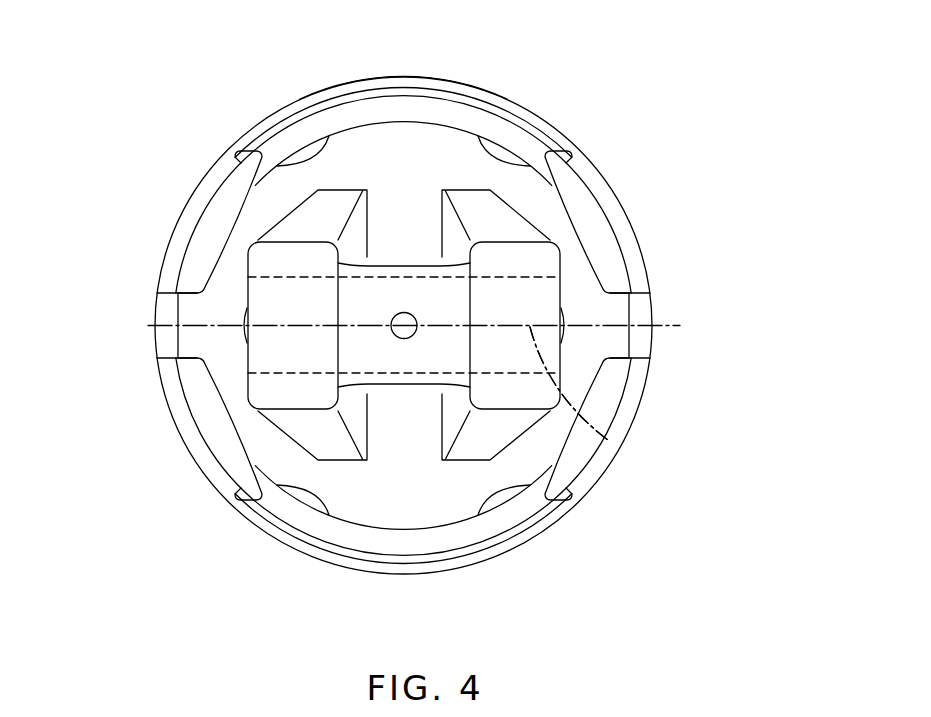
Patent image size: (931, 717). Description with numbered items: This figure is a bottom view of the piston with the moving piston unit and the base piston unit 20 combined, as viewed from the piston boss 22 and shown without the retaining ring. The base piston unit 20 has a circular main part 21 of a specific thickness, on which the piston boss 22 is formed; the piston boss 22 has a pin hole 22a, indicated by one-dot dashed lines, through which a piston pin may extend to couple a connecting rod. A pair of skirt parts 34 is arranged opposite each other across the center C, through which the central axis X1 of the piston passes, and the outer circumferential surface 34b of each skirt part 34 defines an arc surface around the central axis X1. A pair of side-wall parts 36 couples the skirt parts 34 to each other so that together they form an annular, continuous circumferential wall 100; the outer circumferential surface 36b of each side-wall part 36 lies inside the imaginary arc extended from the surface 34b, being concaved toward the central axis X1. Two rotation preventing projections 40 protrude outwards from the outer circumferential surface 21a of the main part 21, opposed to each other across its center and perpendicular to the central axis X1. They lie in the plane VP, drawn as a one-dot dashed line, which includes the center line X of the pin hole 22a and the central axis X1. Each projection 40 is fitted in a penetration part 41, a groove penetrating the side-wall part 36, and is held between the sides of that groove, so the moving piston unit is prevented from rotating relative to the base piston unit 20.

The circumferential wall 100 is at (630, 207).
The base piston unit 20 is at (503, 222).
The main part 21 is at (248, 433).
The outer circumferential surface of the main part 21a is at (370, 531).
The piston boss 22 is at (495, 435).
The pin hole 22a is at (410, 380).
The skirt part 34 is at (508, 107).
The outer circumferential surface of the skirt part 34b is at (407, 77).
The side-wall part 36 is at (620, 265).
The outer circumferential surface of the side-wall part 36b is at (620, 432).
The rotation preventing projection 40 is at (622, 340).
The penetration part 41 is at (645, 307).
The center of the moving piston unit C is at (402, 312).
The center line of the pin hole X is at (637, 385).
The central axis of the piston X1 is at (404, 338).
The plane VP is at (608, 440).